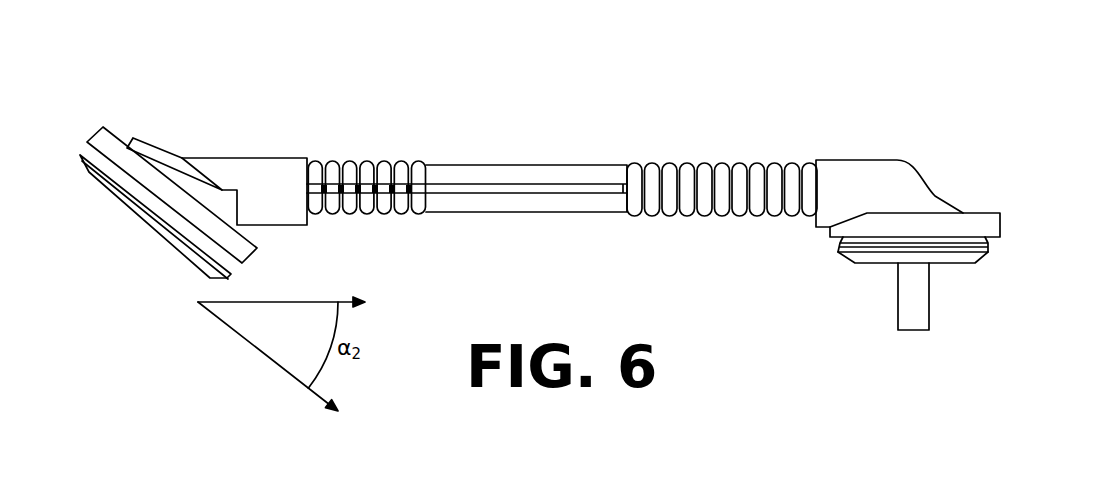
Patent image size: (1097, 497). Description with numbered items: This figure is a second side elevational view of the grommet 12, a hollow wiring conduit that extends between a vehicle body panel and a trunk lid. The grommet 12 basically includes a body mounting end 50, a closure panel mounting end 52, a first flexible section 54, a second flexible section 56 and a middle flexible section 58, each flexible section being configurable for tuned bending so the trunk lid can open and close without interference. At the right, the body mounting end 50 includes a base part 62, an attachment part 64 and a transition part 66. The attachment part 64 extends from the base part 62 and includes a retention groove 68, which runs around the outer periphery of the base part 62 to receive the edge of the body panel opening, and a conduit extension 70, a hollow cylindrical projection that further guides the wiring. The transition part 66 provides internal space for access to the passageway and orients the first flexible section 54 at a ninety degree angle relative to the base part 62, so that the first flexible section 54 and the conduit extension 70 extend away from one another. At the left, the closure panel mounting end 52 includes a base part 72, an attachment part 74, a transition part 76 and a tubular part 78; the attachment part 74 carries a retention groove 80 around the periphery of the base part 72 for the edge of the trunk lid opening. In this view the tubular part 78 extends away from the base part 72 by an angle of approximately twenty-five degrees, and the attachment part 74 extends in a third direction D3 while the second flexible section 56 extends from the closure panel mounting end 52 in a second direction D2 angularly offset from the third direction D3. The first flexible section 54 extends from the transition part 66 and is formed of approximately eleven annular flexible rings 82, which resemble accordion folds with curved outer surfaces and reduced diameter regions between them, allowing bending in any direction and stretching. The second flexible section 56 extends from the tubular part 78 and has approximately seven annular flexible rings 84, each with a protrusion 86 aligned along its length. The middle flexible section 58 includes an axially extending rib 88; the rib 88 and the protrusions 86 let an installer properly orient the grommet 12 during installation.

The grommet 12 is at (600, 100).
The body mounting end 50 is at (947, 216).
The closure panel mounting end 52 is at (218, 158).
The first flexible section 54 is at (722, 189).
The second flexible section 56 is at (380, 155).
The middle flexible section 58 is at (537, 173).
The base part 62 is at (988, 223).
The attachment part 64 is at (973, 253).
The transition part 66 is at (913, 182).
The retention groove 68 is at (987, 248).
The conduit extension 70 is at (923, 303).
The base part 72 is at (100, 143).
The attachment part 74 is at (98, 185).
The transition part 76 is at (165, 157).
The tubular part 78 is at (272, 170).
The retention groove 80 is at (80, 156).
The annular flexible rings 82 is at (738, 173).
The annular flexible rings 84 is at (333, 162).
The protrusion 86 is at (395, 200).
The axially extending rib 88 is at (560, 189).
The second direction D2 is at (318, 300).
The third direction D3 is at (263, 357).